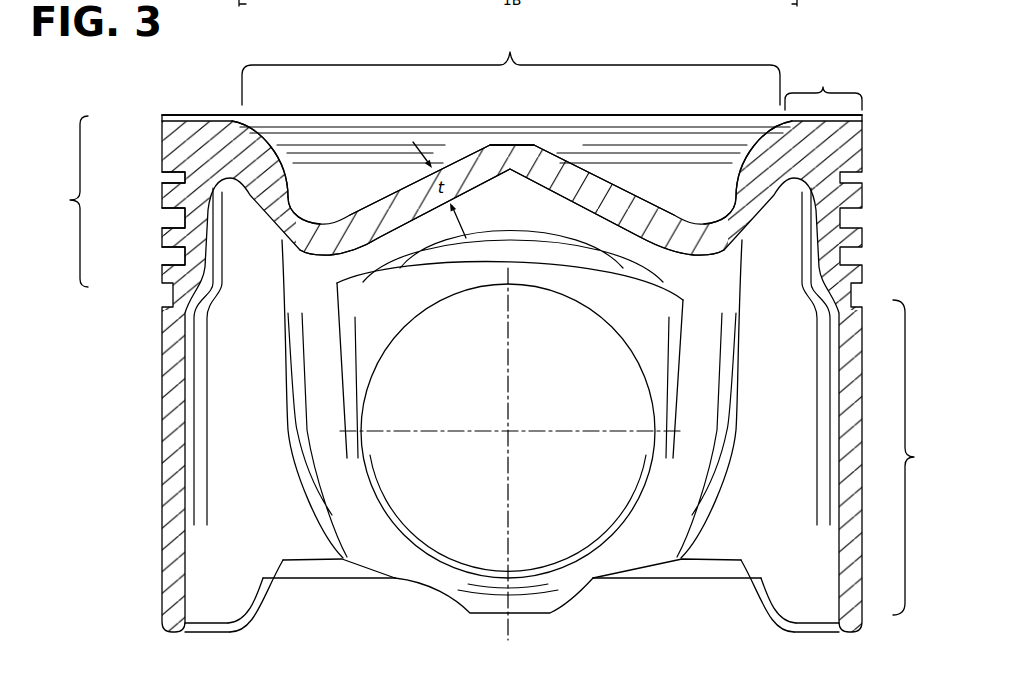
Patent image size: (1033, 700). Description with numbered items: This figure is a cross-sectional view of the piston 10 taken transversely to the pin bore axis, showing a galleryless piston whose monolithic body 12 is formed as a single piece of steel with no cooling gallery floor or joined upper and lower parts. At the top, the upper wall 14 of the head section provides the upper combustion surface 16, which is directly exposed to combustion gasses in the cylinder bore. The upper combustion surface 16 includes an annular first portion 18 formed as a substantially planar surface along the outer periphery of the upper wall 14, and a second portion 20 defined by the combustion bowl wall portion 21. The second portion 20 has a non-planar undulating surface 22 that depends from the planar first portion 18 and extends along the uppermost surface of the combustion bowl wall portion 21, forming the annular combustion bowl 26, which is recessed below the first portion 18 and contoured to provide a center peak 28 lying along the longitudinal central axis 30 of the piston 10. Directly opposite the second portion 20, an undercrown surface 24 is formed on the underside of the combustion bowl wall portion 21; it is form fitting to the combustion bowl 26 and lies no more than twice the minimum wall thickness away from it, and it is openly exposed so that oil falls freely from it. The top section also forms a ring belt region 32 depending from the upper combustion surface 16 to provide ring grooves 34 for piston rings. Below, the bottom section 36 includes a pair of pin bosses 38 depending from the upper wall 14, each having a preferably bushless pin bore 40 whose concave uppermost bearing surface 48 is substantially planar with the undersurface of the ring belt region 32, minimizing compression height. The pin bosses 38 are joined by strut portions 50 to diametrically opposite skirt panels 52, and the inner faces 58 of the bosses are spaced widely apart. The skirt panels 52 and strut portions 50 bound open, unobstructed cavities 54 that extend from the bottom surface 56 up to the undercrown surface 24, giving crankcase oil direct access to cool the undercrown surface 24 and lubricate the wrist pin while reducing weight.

The piston 10 is at (847, 68).
The monolithic body 12 is at (848, 140).
The upper wall 14 is at (256, 155).
The upper combustion surface 16 is at (194, 108).
The annular first portion 18 is at (823, 85).
The second portion 20 is at (511, 63).
The combustion bowl wall portion 21 is at (292, 212).
The undulating surface 22 is at (558, 149).
The undercrown surface 24 is at (272, 244).
The combustion bowl 26 is at (691, 136).
The center peak 28 is at (511, 143).
The longitudinal central axis 30 is at (509, 564).
The ring belt region 32 is at (65, 201).
The ring grooves 34 is at (176, 257).
The bottom section 36 is at (919, 457).
The pin bosses 38 is at (590, 581).
The pin bore 40 is at (432, 560).
The uppermost bearing surface 48 is at (512, 283).
The strut portions 50 is at (275, 588).
The skirt panels 52 is at (158, 593).
The open cavities 54 is at (313, 570).
The bottom surface 56 is at (216, 633).
The inner faces 58 is at (657, 502).